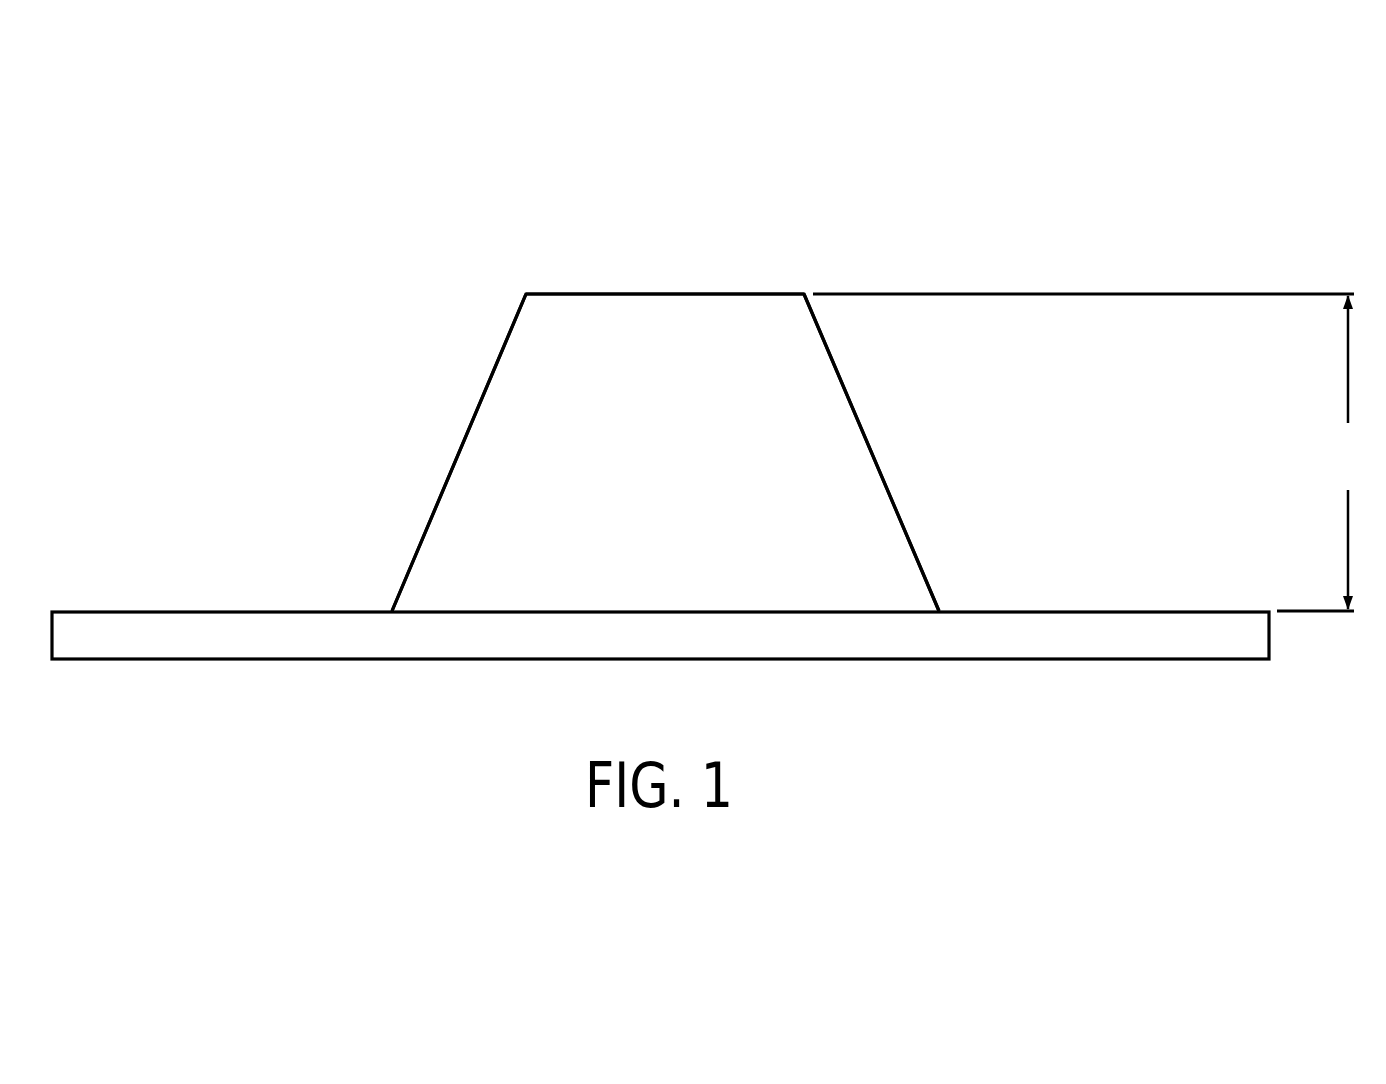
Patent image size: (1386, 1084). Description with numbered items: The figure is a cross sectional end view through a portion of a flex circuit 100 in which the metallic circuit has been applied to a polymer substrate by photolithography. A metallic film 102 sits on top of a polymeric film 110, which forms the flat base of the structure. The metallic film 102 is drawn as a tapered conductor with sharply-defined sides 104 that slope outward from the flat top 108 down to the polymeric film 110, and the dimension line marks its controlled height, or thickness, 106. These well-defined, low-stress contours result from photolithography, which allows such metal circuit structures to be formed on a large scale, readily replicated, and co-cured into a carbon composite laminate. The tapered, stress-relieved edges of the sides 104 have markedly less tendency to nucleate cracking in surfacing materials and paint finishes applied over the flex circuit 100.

The flex circuit 100 is at (897, 183).
The metallic film 102 is at (710, 487).
The sides 104 is at (438, 470).
The height 106 is at (1097, 452).
The flat top 108 is at (642, 278).
The polymeric film 110 is at (1087, 645).